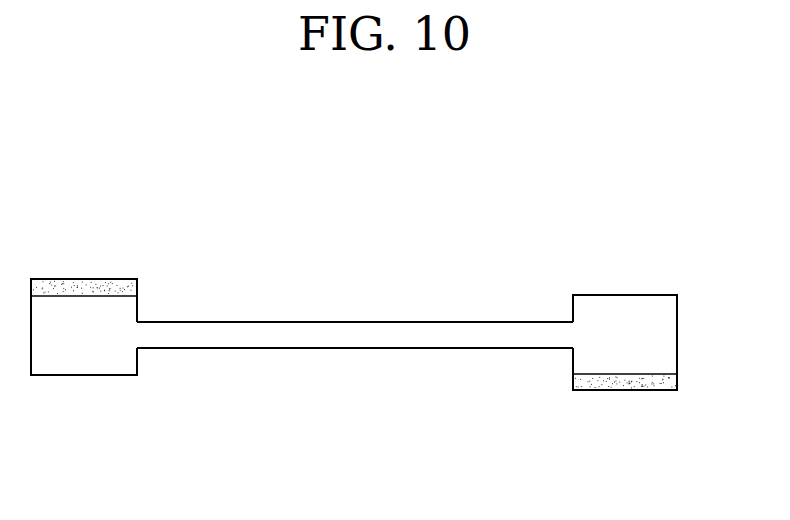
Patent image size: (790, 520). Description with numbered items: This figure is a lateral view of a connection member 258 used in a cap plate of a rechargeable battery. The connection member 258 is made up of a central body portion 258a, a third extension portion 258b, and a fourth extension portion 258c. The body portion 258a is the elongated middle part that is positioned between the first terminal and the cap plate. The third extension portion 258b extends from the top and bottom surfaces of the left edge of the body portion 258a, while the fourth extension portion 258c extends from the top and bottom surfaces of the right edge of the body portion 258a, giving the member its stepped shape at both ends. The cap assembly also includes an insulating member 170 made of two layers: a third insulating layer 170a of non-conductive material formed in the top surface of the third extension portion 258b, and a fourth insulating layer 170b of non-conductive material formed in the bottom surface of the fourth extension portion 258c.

The insulating member 170 is at (377, 333).
The third insulating layer 170a is at (82, 290).
The fourth insulating layer 170b is at (662, 380).
The connection member 258 is at (354, 379).
The body portion 258a is at (353, 340).
The third extension portion 258b is at (117, 362).
The fourth extension portion 258c is at (625, 361).